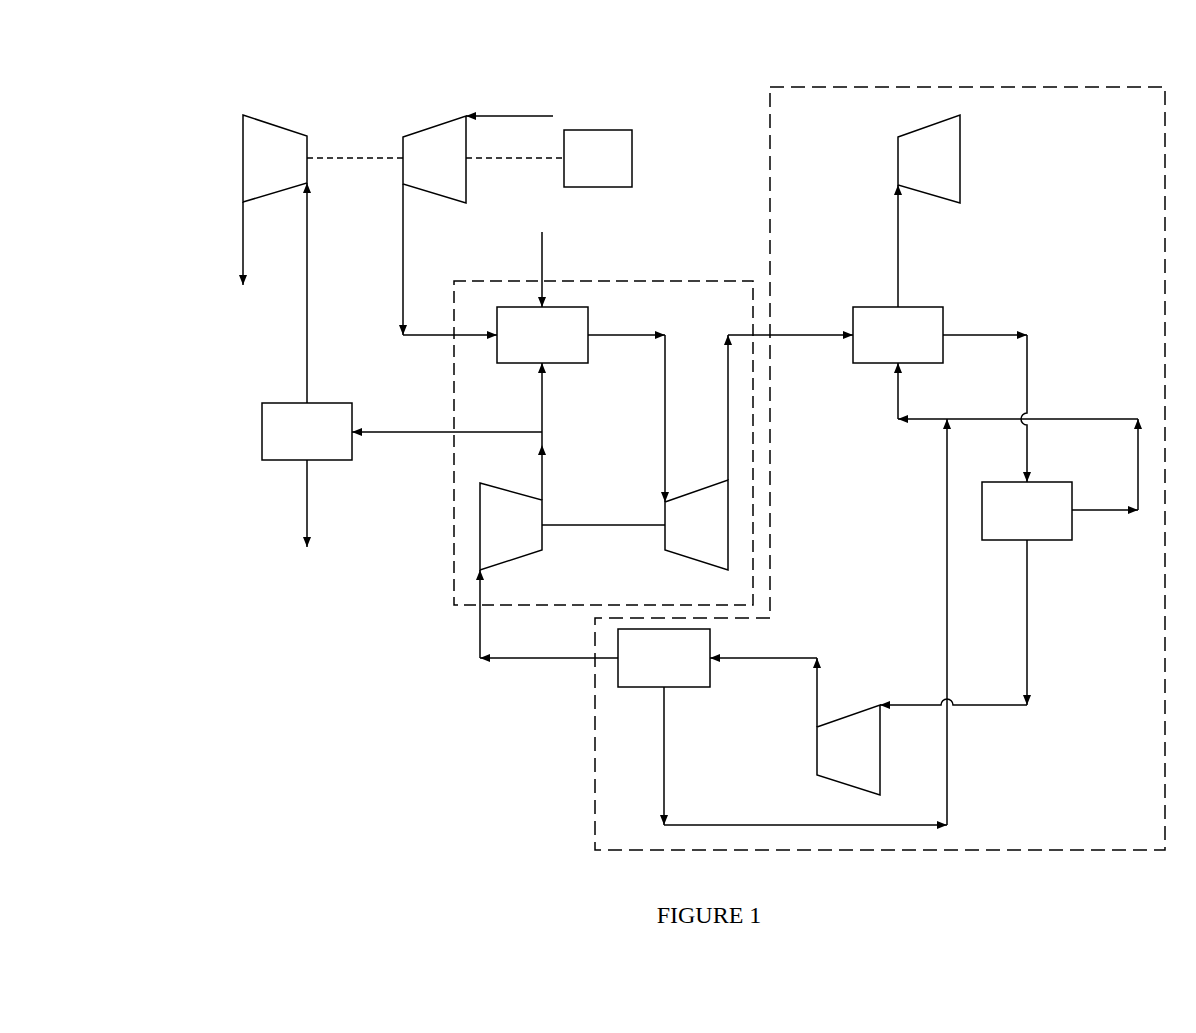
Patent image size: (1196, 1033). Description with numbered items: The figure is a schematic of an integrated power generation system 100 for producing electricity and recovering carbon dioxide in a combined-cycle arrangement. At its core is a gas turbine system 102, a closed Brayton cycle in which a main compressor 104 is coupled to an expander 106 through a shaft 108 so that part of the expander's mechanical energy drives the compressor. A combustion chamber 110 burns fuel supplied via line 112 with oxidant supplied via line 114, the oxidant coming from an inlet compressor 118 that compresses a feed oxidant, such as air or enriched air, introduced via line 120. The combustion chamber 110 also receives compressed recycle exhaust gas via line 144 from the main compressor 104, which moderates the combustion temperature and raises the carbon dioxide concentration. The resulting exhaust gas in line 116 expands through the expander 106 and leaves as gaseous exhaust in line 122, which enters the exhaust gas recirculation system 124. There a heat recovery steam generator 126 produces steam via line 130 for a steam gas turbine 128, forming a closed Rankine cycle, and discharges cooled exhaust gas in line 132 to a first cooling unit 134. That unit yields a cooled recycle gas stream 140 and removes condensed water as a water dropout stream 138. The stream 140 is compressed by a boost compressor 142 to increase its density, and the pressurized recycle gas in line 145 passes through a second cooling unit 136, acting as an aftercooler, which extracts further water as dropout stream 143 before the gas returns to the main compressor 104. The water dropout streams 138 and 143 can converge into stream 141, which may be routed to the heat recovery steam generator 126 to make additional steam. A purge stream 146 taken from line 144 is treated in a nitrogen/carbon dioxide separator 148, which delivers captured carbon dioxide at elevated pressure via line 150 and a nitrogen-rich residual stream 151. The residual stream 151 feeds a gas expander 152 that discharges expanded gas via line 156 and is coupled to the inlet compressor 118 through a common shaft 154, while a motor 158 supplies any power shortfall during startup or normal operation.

The integrated power generation system 100 is at (680, 178).
The gas turbine system 102 is at (650, 280).
The main compressor 104 is at (495, 534).
The expander 106 is at (682, 534).
The shaft 108 is at (610, 526).
The combustion chamber 110 is at (527, 342).
The fuel line 112 is at (542, 248).
The oxidant line 114 is at (430, 338).
The exhaust gas line 116 is at (665, 400).
The inlet compressor 118 is at (418, 169).
The feed oxidant line 120 is at (510, 114).
The gaseous exhaust line 122 is at (809, 334).
The exhaust gas recirculation system 124 is at (770, 197).
The heat recovery steam generator 126 is at (883, 342).
The steam gas turbine 128 is at (915, 167).
The steam line 130 is at (900, 250).
The cooled exhaust gas line 132 is at (975, 338).
The first cooling unit 134 is at (1012, 522).
The second cooling unit 136 is at (649, 667).
The water dropout stream 138 is at (1097, 513).
The cooled recycle gas stream 140 is at (1030, 628).
The water return line 141 is at (897, 392).
The boost compressor 142 is at (833, 760).
The water dropout stream 143 is at (667, 773).
The compressed recycle exhaust gas line 144 is at (545, 475).
The pressurized recycle gas line 145 is at (537, 660).
The purge stream 146 is at (398, 435).
The N2/CO2 separator 148 is at (292, 442).
The CO2 line 150 is at (307, 492).
The residual stream 151 is at (307, 297).
The gas expander 152 is at (258, 167).
The common shaft 154 is at (345, 157).
The expanded exhaust gas line 156 is at (242, 249).
The motor 158 is at (583, 167).